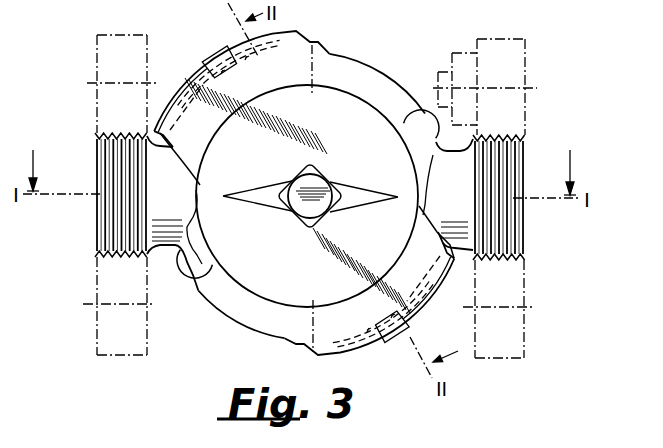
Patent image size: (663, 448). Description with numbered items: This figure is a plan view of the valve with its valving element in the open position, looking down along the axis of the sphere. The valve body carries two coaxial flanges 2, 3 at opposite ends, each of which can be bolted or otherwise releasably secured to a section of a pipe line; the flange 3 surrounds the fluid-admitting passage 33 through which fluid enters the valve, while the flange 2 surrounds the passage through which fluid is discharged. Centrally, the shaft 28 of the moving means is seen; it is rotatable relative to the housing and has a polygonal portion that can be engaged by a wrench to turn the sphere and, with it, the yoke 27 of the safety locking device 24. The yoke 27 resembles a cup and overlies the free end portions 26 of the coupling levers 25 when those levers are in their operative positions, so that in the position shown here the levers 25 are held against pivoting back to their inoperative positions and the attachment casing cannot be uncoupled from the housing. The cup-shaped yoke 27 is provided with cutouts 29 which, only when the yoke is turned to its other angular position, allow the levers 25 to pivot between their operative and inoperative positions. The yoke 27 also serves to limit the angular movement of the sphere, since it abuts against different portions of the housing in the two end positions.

The flange 2 is at (95, 149).
The flange 3 is at (515, 162).
The locking device 24 is at (232, 286).
The levers 25 is at (205, 58).
The free end portions 26 is at (238, 56).
The yoke 27 is at (341, 91).
The shaft 28 is at (305, 210).
The cutouts 29 is at (381, 106).
The fluid-admitting passage 33 is at (458, 205).